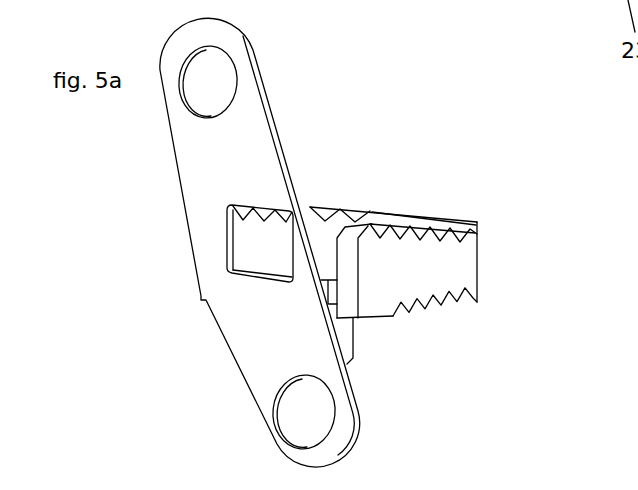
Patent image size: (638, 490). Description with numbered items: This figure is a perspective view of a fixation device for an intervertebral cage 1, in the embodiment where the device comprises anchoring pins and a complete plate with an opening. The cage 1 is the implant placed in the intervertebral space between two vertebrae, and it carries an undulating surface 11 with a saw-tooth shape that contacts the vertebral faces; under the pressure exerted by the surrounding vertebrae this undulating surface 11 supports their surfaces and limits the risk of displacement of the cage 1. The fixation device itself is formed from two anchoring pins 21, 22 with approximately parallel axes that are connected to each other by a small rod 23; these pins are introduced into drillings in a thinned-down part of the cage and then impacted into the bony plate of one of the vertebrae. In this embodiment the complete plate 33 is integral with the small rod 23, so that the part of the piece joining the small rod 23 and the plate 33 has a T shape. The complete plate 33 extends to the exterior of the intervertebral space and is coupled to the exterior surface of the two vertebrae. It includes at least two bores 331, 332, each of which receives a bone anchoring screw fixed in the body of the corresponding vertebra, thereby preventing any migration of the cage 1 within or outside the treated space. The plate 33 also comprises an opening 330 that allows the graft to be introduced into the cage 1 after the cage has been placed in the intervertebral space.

The intervertebral cage 1 is at (453, 252).
The undulating surface 11 is at (447, 308).
The anchoring pin 21 is at (581, 0).
The anchoring pin 22 is at (347, 335).
The small rod 23 is at (273, 278).
The complete plate 33 is at (243, 144).
The opening 330 is at (222, 252).
The bore 331 is at (217, 59).
The bore 332 is at (313, 413).